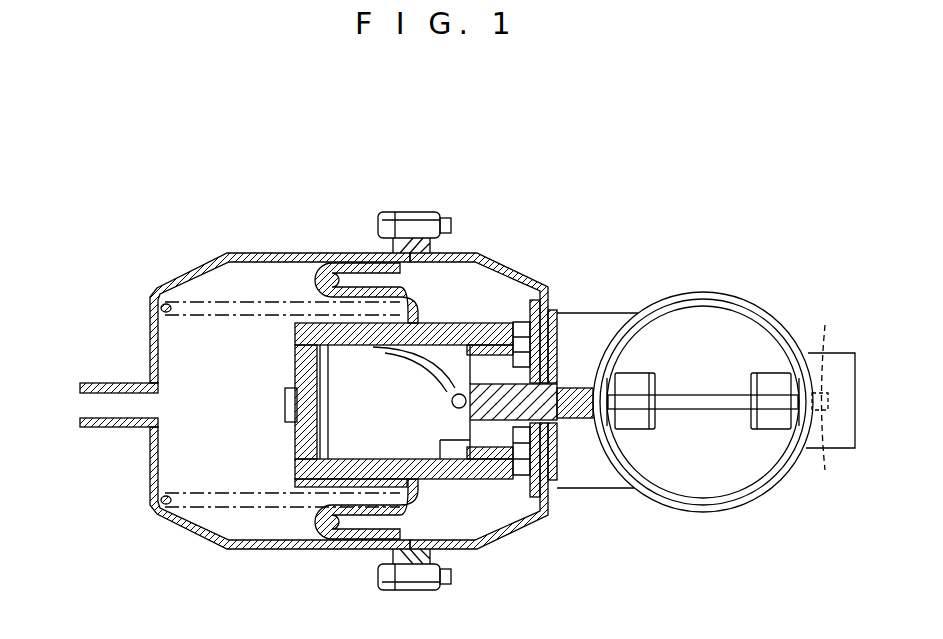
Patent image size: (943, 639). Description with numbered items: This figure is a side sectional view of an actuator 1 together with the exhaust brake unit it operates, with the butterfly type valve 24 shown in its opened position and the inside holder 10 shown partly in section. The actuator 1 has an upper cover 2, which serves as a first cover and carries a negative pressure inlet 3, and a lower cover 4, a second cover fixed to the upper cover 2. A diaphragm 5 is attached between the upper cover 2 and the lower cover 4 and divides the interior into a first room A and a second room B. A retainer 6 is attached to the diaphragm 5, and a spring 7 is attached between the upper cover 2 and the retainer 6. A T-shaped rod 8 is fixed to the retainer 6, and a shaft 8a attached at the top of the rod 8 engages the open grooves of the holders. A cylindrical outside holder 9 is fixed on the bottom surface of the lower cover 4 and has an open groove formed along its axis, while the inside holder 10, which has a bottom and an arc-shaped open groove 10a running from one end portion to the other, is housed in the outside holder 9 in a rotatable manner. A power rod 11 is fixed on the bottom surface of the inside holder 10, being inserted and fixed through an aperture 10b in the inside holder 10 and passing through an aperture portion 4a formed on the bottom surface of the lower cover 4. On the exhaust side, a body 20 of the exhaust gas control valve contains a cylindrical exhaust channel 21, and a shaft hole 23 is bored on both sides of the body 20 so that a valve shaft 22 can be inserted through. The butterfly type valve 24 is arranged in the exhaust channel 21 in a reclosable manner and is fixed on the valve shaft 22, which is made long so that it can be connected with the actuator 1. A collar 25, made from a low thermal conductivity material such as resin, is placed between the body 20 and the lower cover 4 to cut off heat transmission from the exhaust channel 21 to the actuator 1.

The actuator 1 is at (425, 198).
The upper cover 2 is at (230, 253).
The negative pressure inlet 3 is at (90, 408).
The lower cover 4 is at (495, 520).
The aperture portion 4a is at (565, 425).
The diaphragm 5 is at (322, 527).
The retainer 6 is at (297, 442).
The spring 7 is at (203, 500).
The T-shaped rod 8 is at (307, 387).
The shaft 8a is at (500, 268).
The outside holder 9 is at (468, 470).
The inside holder 10 is at (540, 290).
The open groove 10a is at (430, 370).
The aperture 10b is at (530, 430).
The power rod 11 is at (583, 420).
The body 20 is at (708, 290).
The exhaust channel 21 is at (740, 468).
The valve shaft 22 is at (622, 322).
The shaft hole 23 is at (580, 393).
The butterfly type valve 24 is at (718, 397).
The collar 25 is at (568, 345).
The first room A is at (175, 348).
The second room B is at (477, 527).